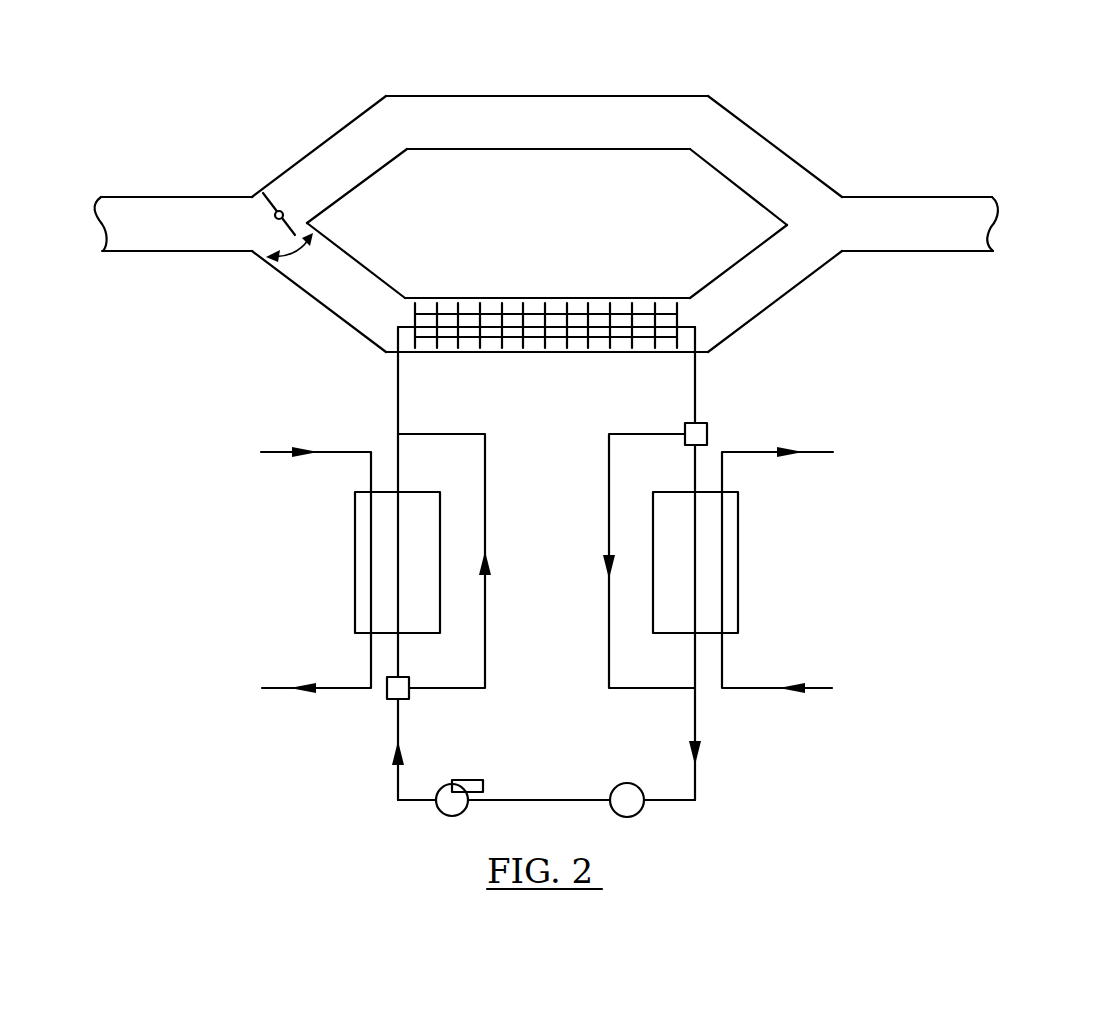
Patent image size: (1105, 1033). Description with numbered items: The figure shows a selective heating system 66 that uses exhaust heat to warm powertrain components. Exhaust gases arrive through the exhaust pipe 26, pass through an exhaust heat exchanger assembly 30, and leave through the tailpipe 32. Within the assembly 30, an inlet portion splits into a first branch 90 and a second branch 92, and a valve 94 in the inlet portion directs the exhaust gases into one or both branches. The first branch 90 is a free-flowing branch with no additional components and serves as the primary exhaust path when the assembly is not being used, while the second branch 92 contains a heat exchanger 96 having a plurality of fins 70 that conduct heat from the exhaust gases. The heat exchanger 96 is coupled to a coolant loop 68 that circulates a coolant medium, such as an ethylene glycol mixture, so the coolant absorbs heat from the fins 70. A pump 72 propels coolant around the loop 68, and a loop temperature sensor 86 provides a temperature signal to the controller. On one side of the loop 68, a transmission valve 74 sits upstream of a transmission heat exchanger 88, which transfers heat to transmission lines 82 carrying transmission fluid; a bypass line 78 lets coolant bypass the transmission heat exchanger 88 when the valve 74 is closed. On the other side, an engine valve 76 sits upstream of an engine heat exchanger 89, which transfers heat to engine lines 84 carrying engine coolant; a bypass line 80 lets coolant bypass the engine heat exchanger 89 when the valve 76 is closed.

The exhaust pipe 26 is at (173, 224).
The tailpipe 32 is at (920, 224).
The exhaust heat exchanger assembly 30 is at (547, 199).
The first branch 90 is at (547, 160).
The second branch 92 is at (547, 287).
The valve 94 is at (276, 213).
The fins 70 is at (548, 308).
The heat exchanger 96 is at (680, 303).
The selective heating system 66 is at (974, 124).
The loop 68 is at (697, 785).
The pump 72 is at (452, 817).
The transmission valve 74 is at (390, 700).
The engine valve 76 is at (707, 430).
The bypass line 78 is at (485, 475).
The bypass line 80 is at (609, 447).
The transmission lines 82 is at (262, 690).
The engine lines 84 is at (817, 690).
The loop temperature sensor 86 is at (627, 817).
The transmission heat exchanger 88 is at (355, 558).
The engine heat exchanger 89 is at (738, 548).